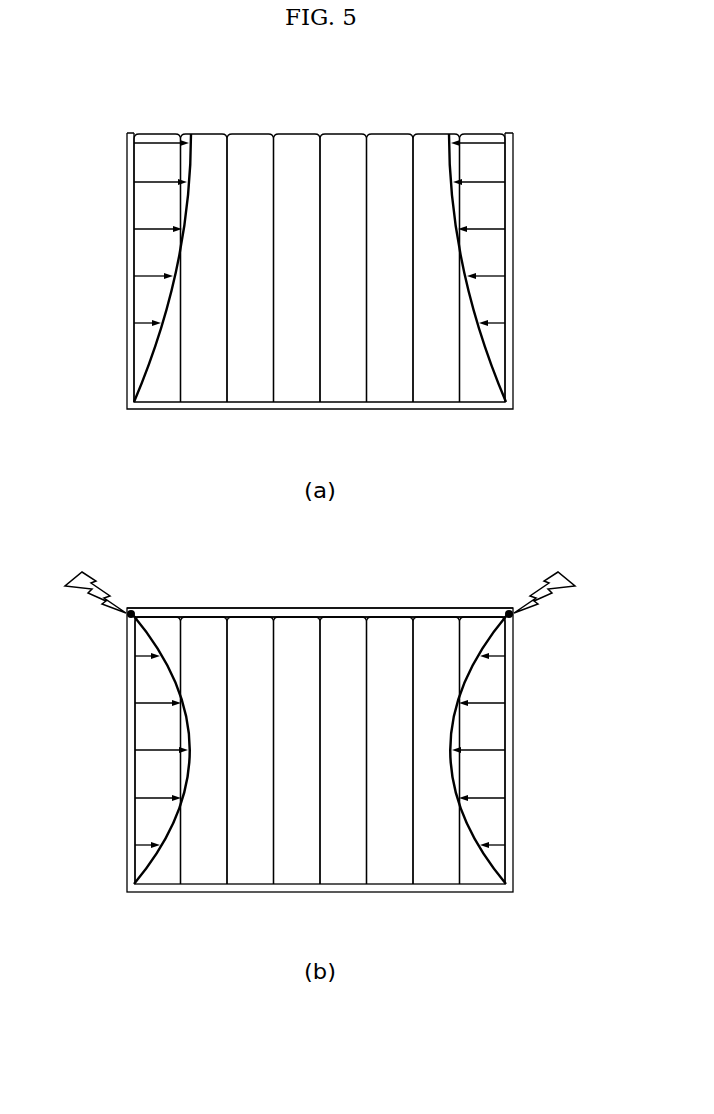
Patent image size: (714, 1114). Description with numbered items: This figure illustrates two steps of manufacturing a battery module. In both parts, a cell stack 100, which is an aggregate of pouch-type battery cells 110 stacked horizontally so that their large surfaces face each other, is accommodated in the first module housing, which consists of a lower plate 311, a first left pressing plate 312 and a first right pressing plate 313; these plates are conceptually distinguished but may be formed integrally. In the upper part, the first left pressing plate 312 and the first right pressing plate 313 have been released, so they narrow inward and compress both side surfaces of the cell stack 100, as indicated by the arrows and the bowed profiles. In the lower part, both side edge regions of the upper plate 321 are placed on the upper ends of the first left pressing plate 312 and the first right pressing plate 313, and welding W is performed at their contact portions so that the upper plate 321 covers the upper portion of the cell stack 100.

The cell stack 100 is at (319, 232).
The pouch-type battery cell 110 is at (342, 153).
The lower plate 311 is at (352, 410).
The first left pressing plate 312 is at (127, 268).
The first right pressing plate 313 is at (513, 268).
The upper plate 321 is at (352, 606).
The welding W is at (126, 617).